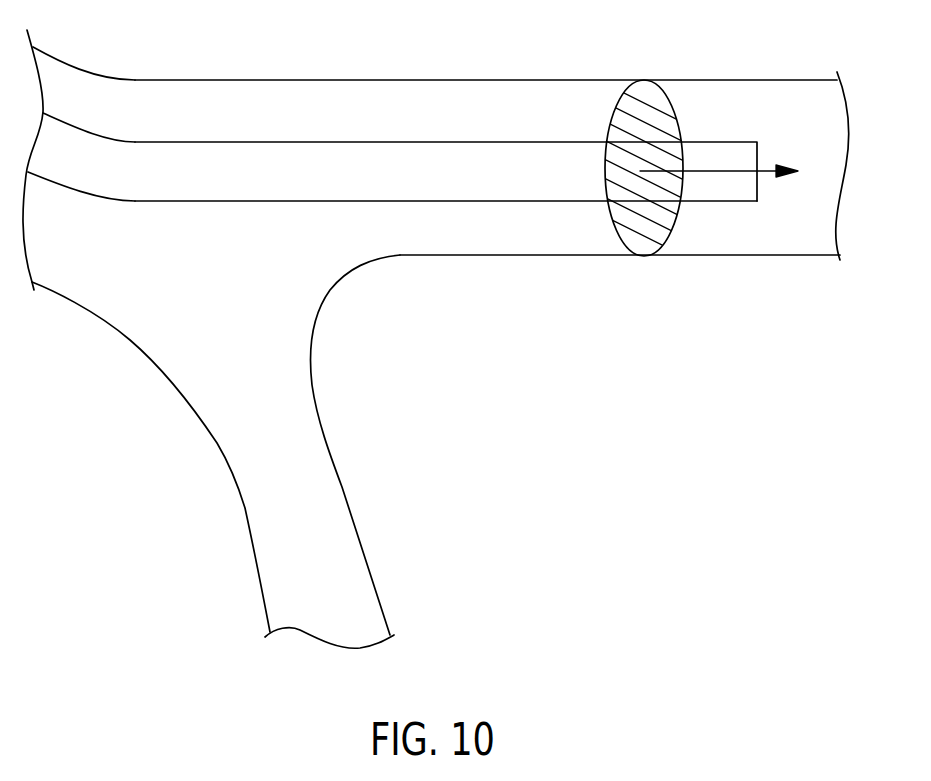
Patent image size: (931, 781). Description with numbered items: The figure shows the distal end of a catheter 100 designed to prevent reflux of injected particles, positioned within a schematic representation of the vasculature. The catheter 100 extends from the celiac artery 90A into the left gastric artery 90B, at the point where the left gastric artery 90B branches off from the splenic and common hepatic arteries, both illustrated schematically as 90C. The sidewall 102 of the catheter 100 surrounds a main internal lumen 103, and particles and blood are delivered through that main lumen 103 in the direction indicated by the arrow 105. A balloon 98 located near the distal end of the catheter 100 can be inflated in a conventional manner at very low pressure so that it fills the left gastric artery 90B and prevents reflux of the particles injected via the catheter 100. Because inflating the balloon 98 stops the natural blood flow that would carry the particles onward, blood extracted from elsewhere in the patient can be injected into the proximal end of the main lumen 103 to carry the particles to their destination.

The celiac artery 90A is at (78, 303).
The left gastric artery 90B is at (511, 80).
The splenic and common hepatic arteries 90C is at (333, 488).
The balloon 98 is at (641, 80).
The catheter 100 is at (185, 106).
The sidewall 102 is at (481, 201).
The main internal lumen 103 is at (400, 192).
The arrow 105 is at (767, 165).